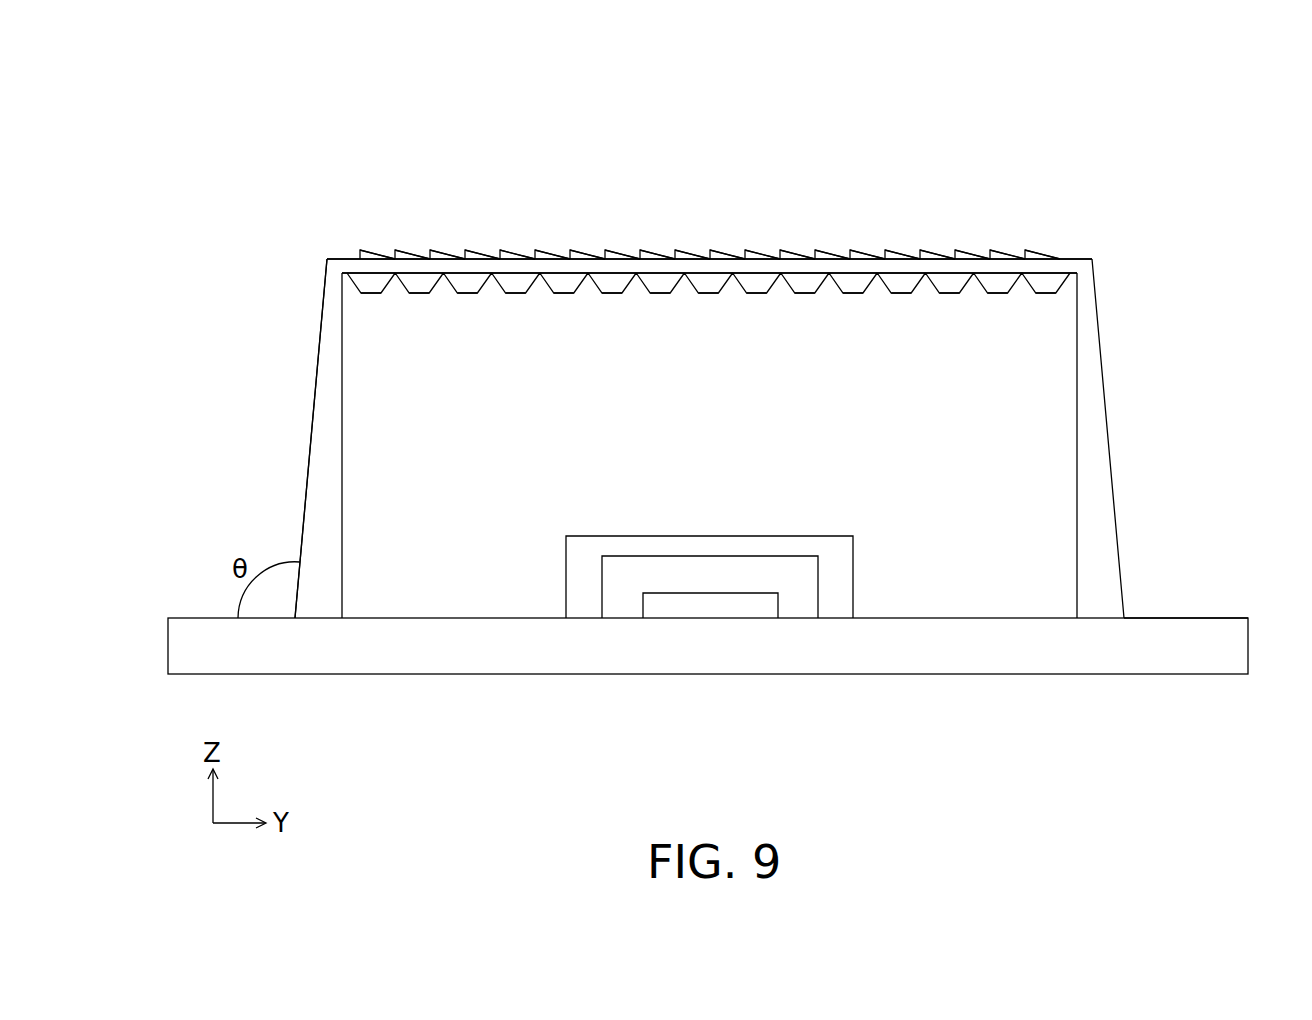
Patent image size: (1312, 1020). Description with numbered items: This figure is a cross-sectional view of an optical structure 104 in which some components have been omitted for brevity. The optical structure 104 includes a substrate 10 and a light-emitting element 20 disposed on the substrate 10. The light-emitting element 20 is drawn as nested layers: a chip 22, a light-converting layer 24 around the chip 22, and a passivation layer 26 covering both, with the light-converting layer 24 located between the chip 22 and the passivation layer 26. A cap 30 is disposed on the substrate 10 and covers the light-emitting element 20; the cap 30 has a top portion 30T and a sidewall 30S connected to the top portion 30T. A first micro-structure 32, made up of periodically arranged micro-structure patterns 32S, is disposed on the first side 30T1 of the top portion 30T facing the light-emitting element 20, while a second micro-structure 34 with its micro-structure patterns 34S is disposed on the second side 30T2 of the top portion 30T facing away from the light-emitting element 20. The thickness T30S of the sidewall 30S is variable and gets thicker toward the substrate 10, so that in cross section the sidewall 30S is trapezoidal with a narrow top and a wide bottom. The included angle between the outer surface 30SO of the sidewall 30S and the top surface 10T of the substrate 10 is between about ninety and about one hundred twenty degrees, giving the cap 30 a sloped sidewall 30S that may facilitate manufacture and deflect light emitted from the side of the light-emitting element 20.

The optical structure 104 is at (205, 146).
The substrate 10 is at (182, 647).
The top surface of the substrate 10T is at (1163, 606).
The light-emitting element 20 is at (623, 491).
The chip 22 is at (653, 598).
The light-converting layer 24 is at (630, 580).
The passivation layer 26 is at (585, 578).
The cap 30 is at (1243, 70).
The sidewall 30S is at (1100, 463).
The outer surface of the sidewall 30SO is at (296, 435).
The top portion 30T is at (1007, 265).
The first side of the top portion 30T1 is at (955, 288).
The second side of the top portion 30T2 is at (1082, 246).
The first micro-structure 32 is at (602, 316).
The micro-structure pattern of the first micro-structure 32S is at (421, 290).
The second micro-structure 34 is at (543, 238).
The micro-structure patterns 34S is at (397, 252).
The thickness of the sidewall T30S is at (1077, 618).